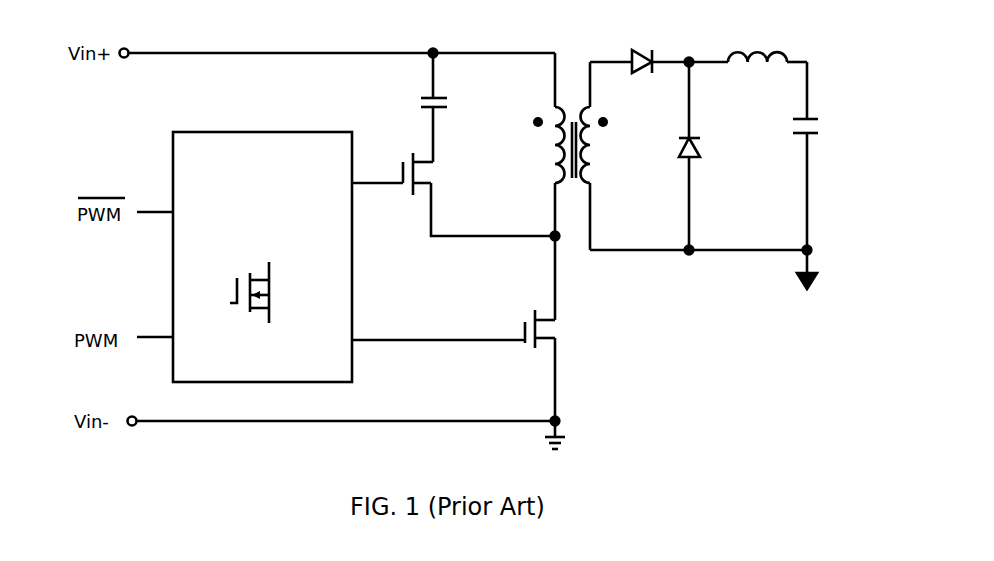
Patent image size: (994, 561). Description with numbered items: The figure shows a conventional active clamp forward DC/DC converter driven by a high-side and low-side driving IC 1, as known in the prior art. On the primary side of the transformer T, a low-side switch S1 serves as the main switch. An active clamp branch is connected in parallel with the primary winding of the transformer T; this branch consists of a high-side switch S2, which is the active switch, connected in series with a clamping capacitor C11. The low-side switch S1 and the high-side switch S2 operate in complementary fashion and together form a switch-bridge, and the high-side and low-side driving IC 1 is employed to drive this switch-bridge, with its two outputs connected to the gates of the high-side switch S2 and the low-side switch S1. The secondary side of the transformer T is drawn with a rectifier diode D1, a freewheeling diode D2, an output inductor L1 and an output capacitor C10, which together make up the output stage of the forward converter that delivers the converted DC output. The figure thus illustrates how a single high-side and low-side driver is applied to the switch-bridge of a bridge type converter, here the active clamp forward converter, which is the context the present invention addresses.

The high-side and low-side driving IC 1 is at (358, 374).
The low-side switch S1 is at (453, 328).
The high-side switch S2 is at (453, 194).
The clamping capacitor C11 is at (410, 107).
The transformer T is at (565, 151).
The rectifier diode D1 is at (645, 45).
The freewheeling diode D2 is at (668, 156).
The output inductor L1 is at (785, 44).
The output capacitor C10 is at (782, 156).